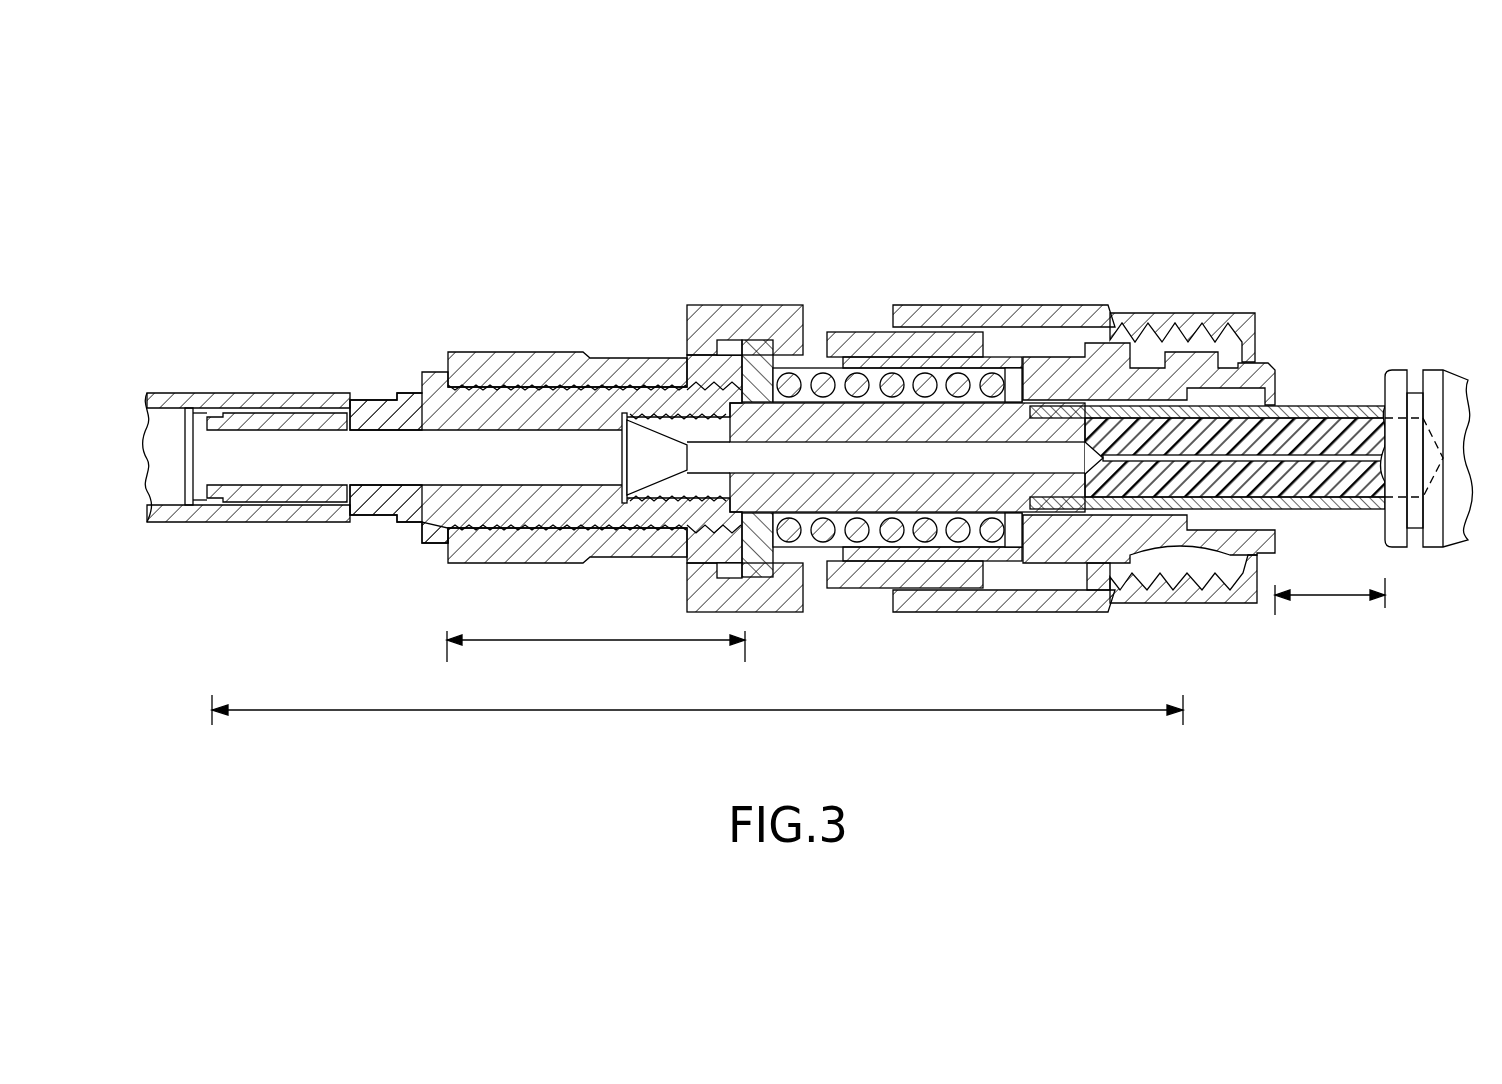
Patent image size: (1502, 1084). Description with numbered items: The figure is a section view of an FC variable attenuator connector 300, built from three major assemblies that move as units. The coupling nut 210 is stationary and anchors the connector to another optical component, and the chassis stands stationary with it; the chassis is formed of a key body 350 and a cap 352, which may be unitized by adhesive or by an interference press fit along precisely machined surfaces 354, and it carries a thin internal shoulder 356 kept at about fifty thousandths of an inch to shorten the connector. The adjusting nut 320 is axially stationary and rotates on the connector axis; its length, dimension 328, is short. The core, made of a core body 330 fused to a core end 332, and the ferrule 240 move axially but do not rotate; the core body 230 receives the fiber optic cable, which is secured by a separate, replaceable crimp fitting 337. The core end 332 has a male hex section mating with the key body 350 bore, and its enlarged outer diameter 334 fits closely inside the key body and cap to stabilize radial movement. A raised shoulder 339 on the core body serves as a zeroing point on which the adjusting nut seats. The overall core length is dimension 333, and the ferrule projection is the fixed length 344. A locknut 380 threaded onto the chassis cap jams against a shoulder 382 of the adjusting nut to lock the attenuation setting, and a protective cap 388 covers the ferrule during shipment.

The FC VAC 300 is at (383, 295).
The coupling nut 210 is at (1010, 318).
The core body 230 is at (370, 400).
The ferrule 240 is at (1350, 430).
The adjusting nut 320 is at (470, 360).
The core body 330 is at (425, 382).
The core end 332 is at (875, 492).
The enlarged outer diameter 334 is at (1017, 530).
The crimp fitting 337 is at (223, 522).
The raised shoulder 339 is at (423, 545).
The key body 350 is at (1105, 355).
The cap 352 is at (845, 335).
The surfaces 354 is at (947, 352).
The internal shoulder 356 is at (768, 372).
The locknut 380 is at (709, 432).
The shoulder 382 is at (716, 340).
The protective cap 388 is at (1455, 395).
The overall length of adjusting nut 328 is at (612, 643).
The overall length of core 333 is at (648, 712).
The length of ferrule 344 is at (1337, 597).